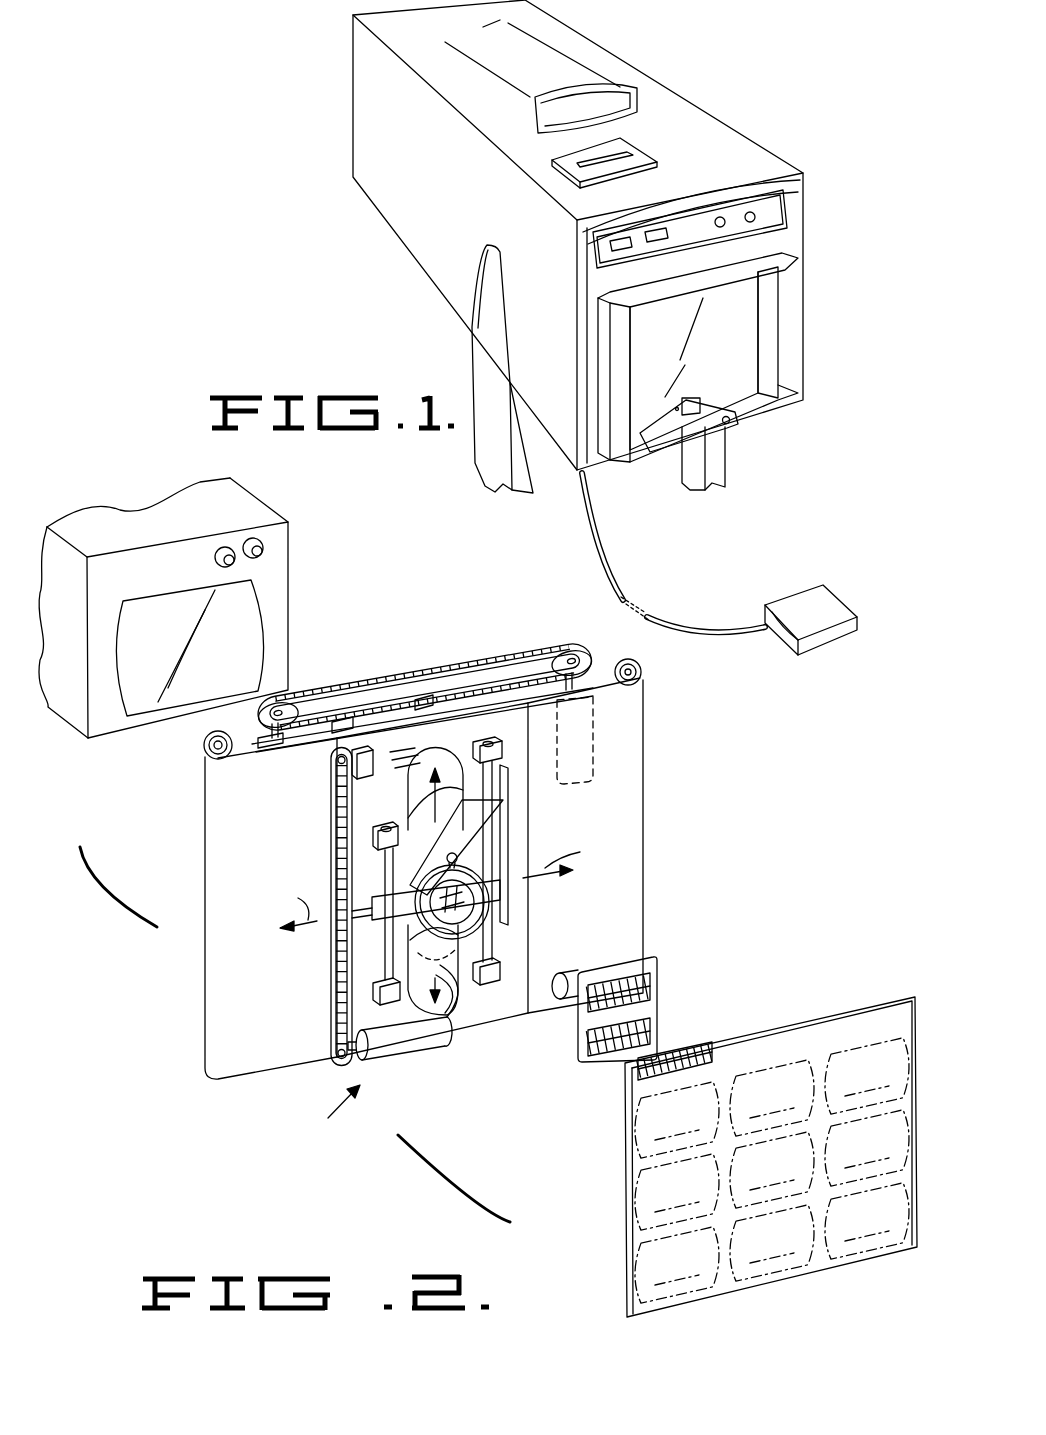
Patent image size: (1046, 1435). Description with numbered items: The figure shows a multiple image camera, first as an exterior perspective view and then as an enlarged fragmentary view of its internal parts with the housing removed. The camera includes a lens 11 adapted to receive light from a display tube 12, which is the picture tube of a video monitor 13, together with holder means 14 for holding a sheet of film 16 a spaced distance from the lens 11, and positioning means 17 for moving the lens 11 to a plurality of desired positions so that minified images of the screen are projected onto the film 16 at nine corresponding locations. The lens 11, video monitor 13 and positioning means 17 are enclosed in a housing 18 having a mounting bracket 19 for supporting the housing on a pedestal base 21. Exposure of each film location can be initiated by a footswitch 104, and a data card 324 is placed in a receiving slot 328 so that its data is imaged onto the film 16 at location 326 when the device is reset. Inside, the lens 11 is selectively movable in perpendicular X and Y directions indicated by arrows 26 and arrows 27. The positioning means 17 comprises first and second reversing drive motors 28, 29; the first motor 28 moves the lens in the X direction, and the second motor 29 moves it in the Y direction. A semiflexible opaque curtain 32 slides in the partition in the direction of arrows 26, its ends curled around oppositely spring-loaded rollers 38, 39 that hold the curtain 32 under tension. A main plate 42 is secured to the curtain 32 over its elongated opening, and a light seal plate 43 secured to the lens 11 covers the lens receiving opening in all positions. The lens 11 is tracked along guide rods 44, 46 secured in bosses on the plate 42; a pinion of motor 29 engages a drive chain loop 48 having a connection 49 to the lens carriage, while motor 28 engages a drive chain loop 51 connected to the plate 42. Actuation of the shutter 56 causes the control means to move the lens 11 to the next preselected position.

In FIG. 1, the housing 18 is at (735, 143).
In FIG. 1, the receiving slot 328 is at (630, 147).
In FIG. 1, the holder means 14 is at (772, 320).
In FIG. 1, the mounting bracket 19 is at (476, 292).
In FIG. 1, the pedestal base 21 is at (717, 467).
In FIG. 1, the footswitch 104 is at (820, 590).
In FIG. 1, the video monitor 13 is at (243, 505).
In FIG. 1, the display tube 12 is at (243, 640).
In FIG. 2, the drive chain loop 51 is at (453, 690).
In FIG. 2, the roller 38 is at (641, 668).
In FIG. 2, the roller 39 is at (204, 748).
In FIG. 2, the first reversing drive motor 28 is at (594, 743).
In FIG. 2, the arrows (Y direction) 27 is at (453, 765).
In FIG. 2, the shutter 56 is at (456, 866).
In FIG. 2, the guide rod 44 is at (385, 860).
In FIG. 2, the lens 11 is at (468, 900).
In FIG. 2, the arrows (X direction) 26 is at (442, 887).
In FIG. 2, the curtain 32 is at (222, 990).
In FIG. 2, the guide rod 46 is at (492, 943).
In FIG. 2, the main plate 42 is at (520, 962).
In FIG. 2, the connection 49 is at (360, 917).
In FIG. 2, the drive chain loop 48 is at (332, 1010).
In FIG. 2, the light seal plate 43 is at (447, 967).
In FIG. 2, the second reversing drive motor 29 is at (402, 1050).
In FIG. 2, the positioning means 17 is at (333, 1109).
In FIG. 2, the data card 324 is at (657, 968).
In FIG. 2, the location 326 is at (700, 1050).
In FIG. 2, the sheet of film 16 is at (848, 1008).